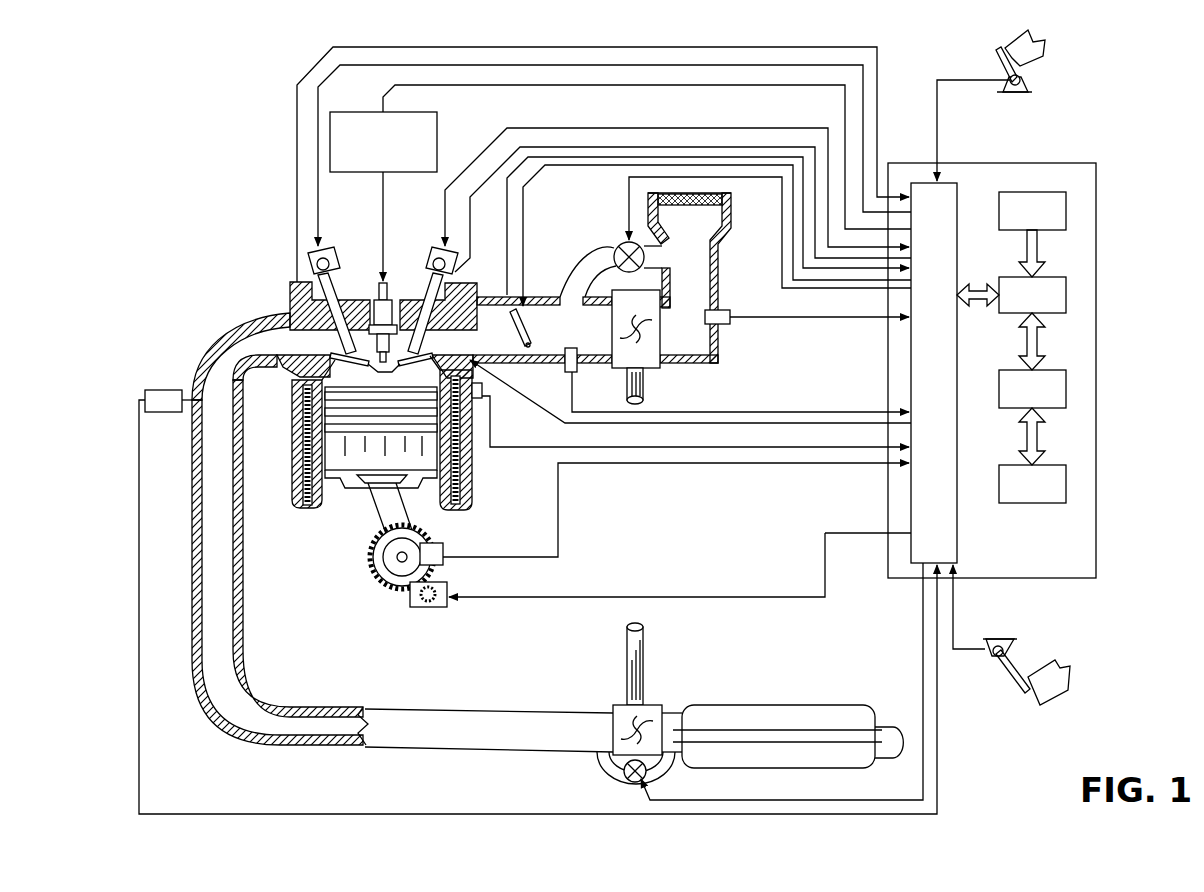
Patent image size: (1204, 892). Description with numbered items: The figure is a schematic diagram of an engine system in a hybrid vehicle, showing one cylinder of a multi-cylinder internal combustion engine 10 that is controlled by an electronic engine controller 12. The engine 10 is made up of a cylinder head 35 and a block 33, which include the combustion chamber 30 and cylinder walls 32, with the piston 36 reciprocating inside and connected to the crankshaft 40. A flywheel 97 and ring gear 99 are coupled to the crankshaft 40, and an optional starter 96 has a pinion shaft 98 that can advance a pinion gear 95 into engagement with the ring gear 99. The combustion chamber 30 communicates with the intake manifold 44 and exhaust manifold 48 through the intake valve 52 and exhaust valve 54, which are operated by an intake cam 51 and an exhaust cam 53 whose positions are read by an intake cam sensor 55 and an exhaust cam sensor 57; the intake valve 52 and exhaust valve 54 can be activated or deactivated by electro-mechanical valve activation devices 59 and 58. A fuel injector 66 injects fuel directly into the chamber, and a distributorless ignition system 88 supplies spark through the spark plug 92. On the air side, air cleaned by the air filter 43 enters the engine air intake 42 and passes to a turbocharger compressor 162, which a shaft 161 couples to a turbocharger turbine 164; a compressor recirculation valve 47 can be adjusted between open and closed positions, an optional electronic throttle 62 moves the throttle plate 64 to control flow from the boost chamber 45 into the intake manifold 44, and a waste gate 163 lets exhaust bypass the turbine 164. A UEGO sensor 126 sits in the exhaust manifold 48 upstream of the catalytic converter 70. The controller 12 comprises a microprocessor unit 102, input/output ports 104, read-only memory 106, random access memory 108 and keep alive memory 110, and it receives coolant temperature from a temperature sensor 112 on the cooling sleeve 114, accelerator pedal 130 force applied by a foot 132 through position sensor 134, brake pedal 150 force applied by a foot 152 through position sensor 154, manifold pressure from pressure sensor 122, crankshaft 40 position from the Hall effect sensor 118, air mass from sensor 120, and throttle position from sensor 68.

The internal combustion engine 10 is at (230, 238).
The electronic engine controller 12 is at (1093, 163).
The combustion chamber 30 is at (388, 373).
The cylinder walls 32 is at (330, 500).
The block 33 is at (288, 410).
The cylinder head 35 is at (287, 280).
The piston 36 is at (364, 466).
The crankshaft 40 is at (400, 580).
The engine air intake 42 is at (583, 214).
The air filter 43 is at (710, 207).
The intake manifold 44 is at (542, 330).
The boost chamber 45 is at (649, 278).
The compressor recirculation valve 47 is at (622, 248).
The exhaust manifold 48 is at (280, 529).
The intake cam 51 is at (438, 247).
The intake valve 52 is at (435, 339).
The exhaust cam 53 is at (332, 247).
The exhaust valve 54 is at (300, 323).
The intake cam sensor 55 is at (455, 272).
The exhaust cam sensor 57 is at (312, 262).
The valve activation device 58 is at (330, 266).
The valve activation device 59 is at (434, 269).
The electronic throttle 62 is at (530, 319).
The throttle plate 64 is at (530, 346).
The fuel injector 66 is at (484, 389).
The throttle position sensor 68 is at (507, 296).
The catalytic converter 70 is at (720, 705).
The distributorless ignition system 88 is at (345, 112).
The spark plug 92 is at (379, 283).
The pinion gear 95 is at (440, 608).
The starter 96 is at (446, 606).
The flywheel 97 is at (390, 552).
The pinion shaft 98 is at (425, 608).
The ring gear 99 is at (398, 588).
The microprocessor unit 102 is at (1067, 293).
The input/output ports 104 is at (960, 186).
The read-only memory 106 is at (1067, 206).
The random access memory 108 is at (1067, 388).
The keep alive memory 110 is at (1067, 483).
The temperature sensor 112 is at (481, 399).
The cooling sleeve 114 is at (458, 466).
The Hall effect sensor 118 is at (447, 545).
The air mass sensor 120 is at (731, 315).
The pressure sensor 122 is at (565, 367).
The Universal Exhaust Gas Oxygen sensor 126 is at (145, 395).
The accelerator pedal 130 is at (1000, 57).
The foot 132 is at (1040, 46).
The position sensor 134 is at (1022, 84).
The brake pedal 150 is at (1022, 692).
The foot 152 is at (1055, 662).
The position sensor 154 is at (993, 642).
The shaft 161 is at (628, 387).
The turbocharger compressor 162 is at (648, 357).
The waste gate 163 is at (624, 783).
The turbocharger turbine 164 is at (618, 705).